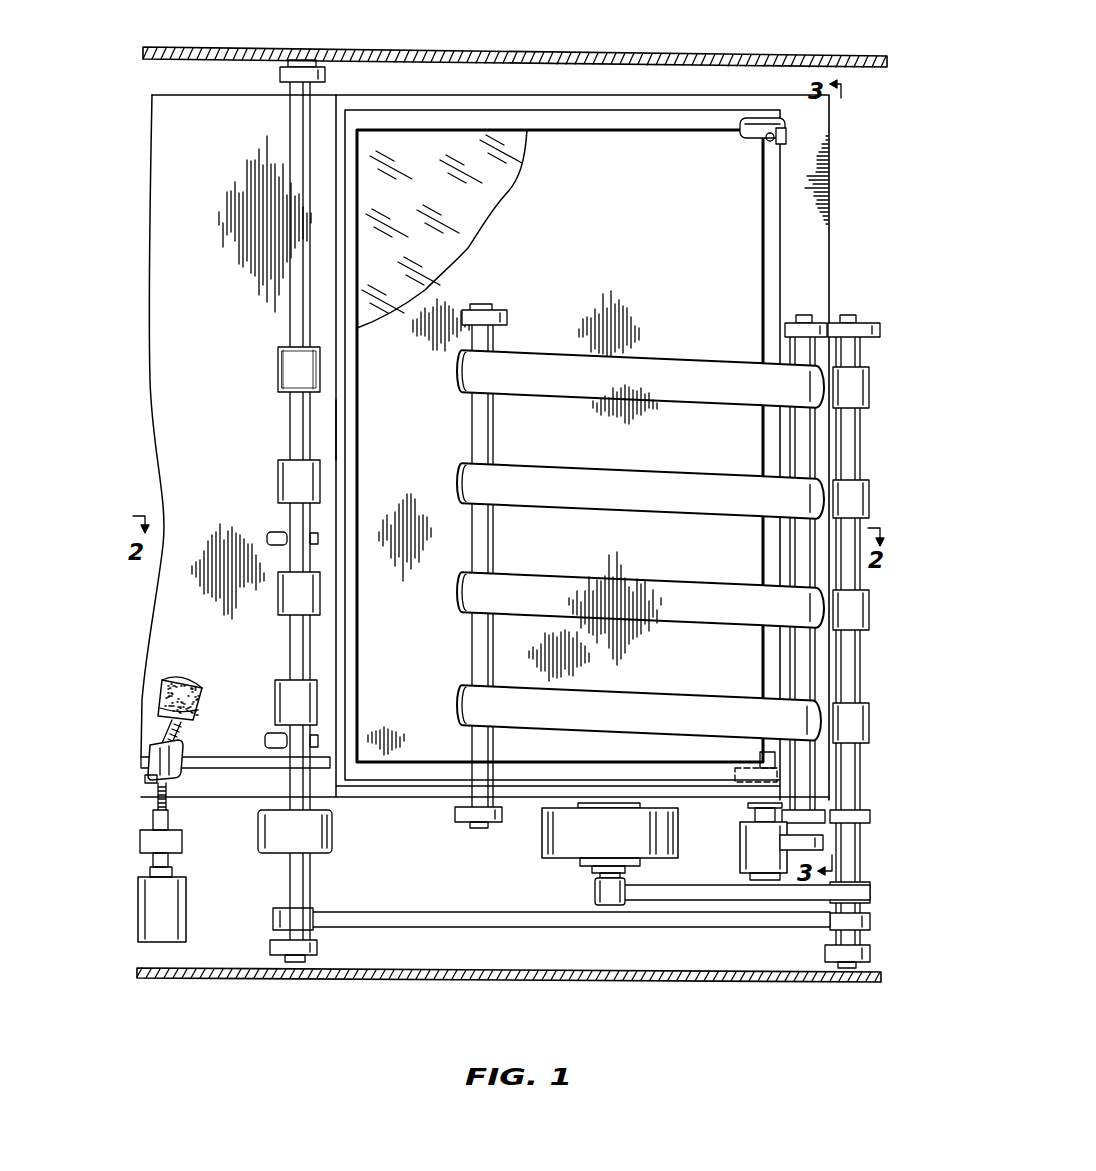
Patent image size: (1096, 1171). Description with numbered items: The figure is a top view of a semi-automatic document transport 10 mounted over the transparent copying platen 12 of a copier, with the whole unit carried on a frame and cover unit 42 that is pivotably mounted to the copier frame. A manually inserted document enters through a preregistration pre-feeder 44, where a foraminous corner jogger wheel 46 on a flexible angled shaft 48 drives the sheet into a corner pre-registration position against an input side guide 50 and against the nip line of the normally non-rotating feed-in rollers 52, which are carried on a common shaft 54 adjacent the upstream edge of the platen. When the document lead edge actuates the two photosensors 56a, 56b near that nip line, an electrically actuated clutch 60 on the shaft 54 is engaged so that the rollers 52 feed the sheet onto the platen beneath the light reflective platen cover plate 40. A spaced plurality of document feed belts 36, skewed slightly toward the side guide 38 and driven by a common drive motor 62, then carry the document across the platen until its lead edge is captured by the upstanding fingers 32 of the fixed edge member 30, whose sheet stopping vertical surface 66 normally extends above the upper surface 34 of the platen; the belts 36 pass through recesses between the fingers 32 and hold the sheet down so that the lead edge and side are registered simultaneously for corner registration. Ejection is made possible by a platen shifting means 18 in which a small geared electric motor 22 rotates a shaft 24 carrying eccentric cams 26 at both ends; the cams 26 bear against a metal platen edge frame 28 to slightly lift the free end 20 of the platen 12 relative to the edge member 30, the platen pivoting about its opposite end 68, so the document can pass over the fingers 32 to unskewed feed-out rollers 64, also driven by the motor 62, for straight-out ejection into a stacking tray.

The semi-automatic document transport 10 is at (702, 322).
The platen 12 is at (425, 158).
The platen shifting means 18 is at (734, 866).
The free end of the platen 20 is at (760, 675).
The geared electric motor 22 is at (742, 853).
The shaft 24 is at (764, 137).
The eccentric cams 26 is at (753, 116).
The platen edge frame 28 is at (630, 125).
The fixed edge member 30 is at (760, 535).
The upstanding fingers 32 is at (763, 435).
The upper surface of the platen 34 is at (466, 262).
The document feed belts 36 is at (577, 478).
The side guide 38 is at (412, 757).
The platen cover plate 40 is at (582, 150).
The frame and cover unit 42 is at (548, 32).
The preregistration pre-feeder 44 is at (192, 826).
The corner jogger wheel 46 is at (180, 678).
The flexible angled shaft 48 is at (165, 783).
The input side guide 50 is at (215, 755).
The feed-in rollers 52 is at (292, 469).
The common shaft 54 is at (290, 662).
The photosensor 56a is at (274, 734).
The photosensor 56b is at (277, 535).
The electrically actuated clutch 60 is at (332, 839).
The drive motor 62 is at (550, 829).
The feed-out rollers 64 is at (878, 650).
The sheet stopping vertical surface 66 is at (760, 565).
The opposite end of the platen 68 is at (355, 437).